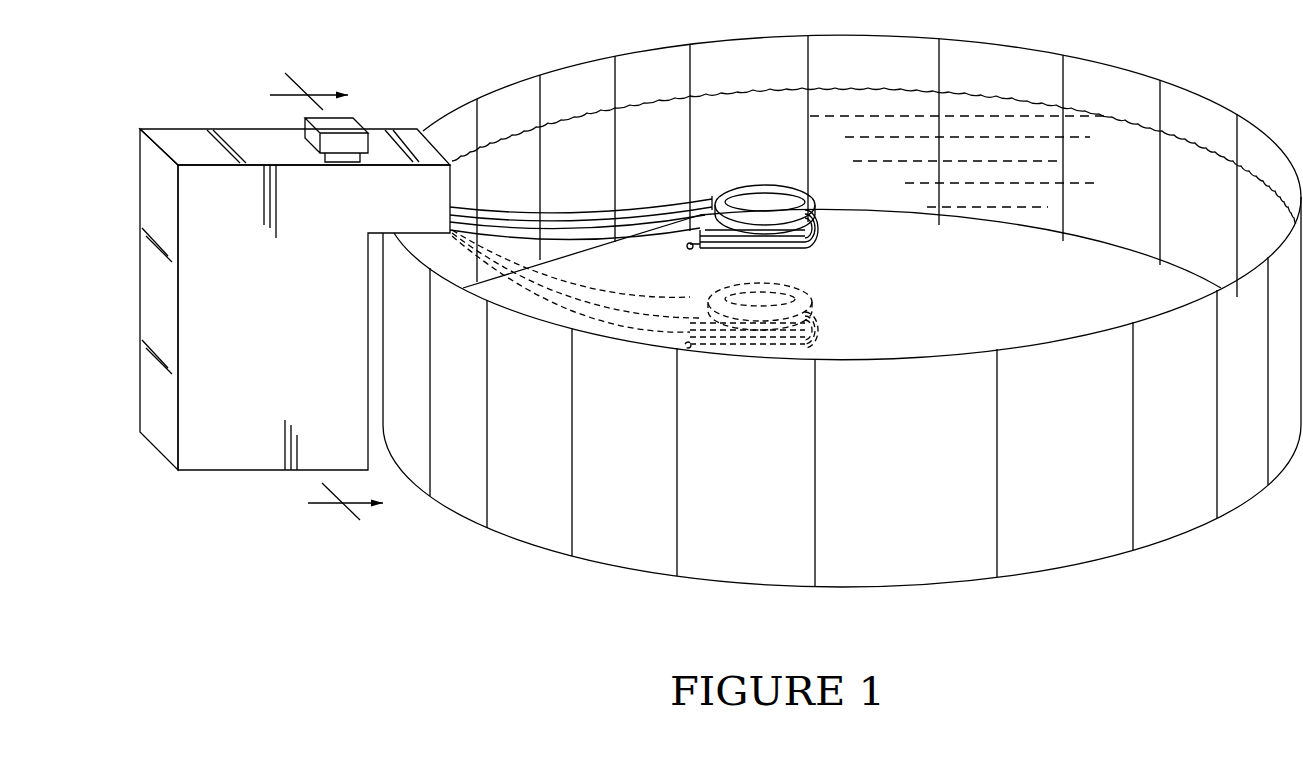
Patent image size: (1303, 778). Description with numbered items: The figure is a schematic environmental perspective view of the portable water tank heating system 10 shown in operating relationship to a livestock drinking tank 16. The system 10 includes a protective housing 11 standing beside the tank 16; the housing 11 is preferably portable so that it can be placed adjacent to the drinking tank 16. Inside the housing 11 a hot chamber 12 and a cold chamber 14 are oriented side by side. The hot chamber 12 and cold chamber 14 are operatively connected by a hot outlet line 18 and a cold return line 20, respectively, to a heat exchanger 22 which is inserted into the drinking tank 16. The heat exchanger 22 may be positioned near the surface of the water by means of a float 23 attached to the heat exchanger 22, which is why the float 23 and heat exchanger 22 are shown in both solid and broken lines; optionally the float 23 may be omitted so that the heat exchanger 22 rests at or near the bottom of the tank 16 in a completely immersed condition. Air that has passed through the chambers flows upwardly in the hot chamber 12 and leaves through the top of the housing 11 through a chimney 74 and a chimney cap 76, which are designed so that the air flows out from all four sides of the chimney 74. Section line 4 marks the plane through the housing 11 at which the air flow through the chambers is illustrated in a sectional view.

The portable water tank heating system 10 is at (430, 107).
The protective housing 11 is at (150, 272).
The hot chamber 12 is at (275, 460).
The cold chamber 14 is at (190, 143).
The livestock drinking tank 16 is at (1175, 508).
The hot outlet line 18 is at (593, 236).
The cold return line 20 is at (660, 202).
The heat exchanger 22 is at (838, 234).
The float 23 is at (773, 188).
The section line 4- 4 is at (337, 296).
The chimney 74 is at (340, 158).
The chimney cap 76 is at (353, 142).